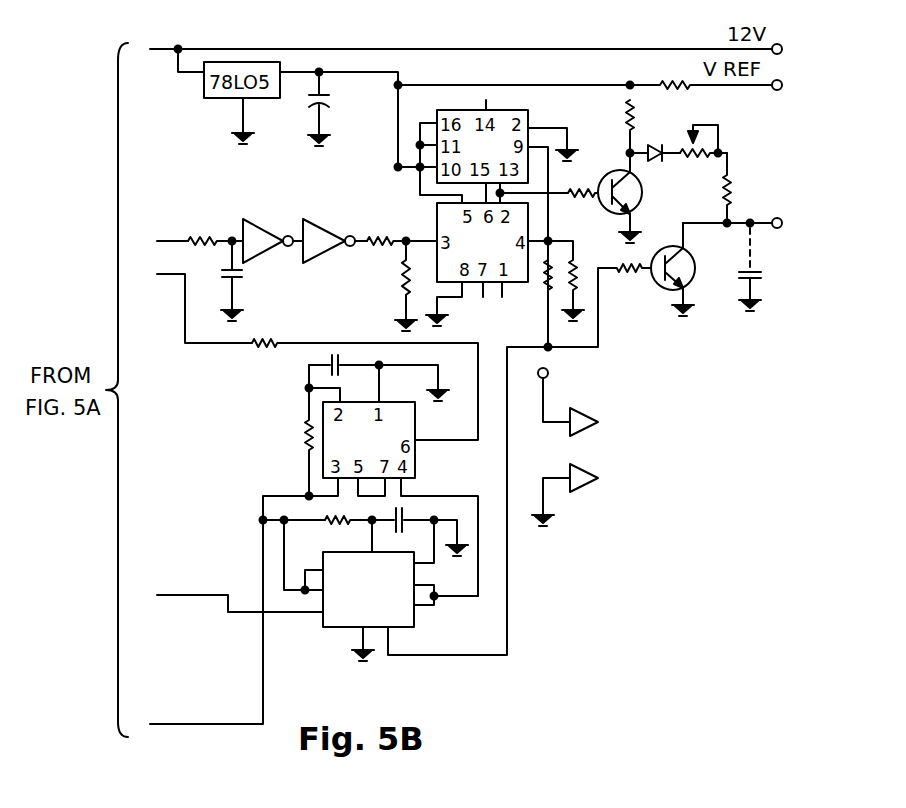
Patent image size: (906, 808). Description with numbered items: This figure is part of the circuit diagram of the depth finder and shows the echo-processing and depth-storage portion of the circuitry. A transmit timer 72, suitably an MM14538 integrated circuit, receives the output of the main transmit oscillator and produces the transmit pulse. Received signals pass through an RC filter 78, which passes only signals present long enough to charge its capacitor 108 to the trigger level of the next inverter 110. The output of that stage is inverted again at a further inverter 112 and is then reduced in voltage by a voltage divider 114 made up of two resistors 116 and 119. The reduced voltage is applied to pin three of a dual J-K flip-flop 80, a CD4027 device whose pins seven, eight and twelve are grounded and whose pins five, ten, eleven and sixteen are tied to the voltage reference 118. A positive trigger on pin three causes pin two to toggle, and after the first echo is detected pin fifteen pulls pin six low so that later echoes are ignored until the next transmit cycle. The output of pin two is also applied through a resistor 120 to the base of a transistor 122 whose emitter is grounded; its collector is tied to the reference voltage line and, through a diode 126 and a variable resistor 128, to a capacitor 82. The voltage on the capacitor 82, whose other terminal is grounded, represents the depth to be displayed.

The transmit timer 72 is at (321, 632).
The RC filter 78 is at (208, 236).
The dual J-K flip-flop 80 is at (495, 300).
The capacitor 82 is at (740, 282).
The capacitor 108 is at (245, 285).
The inverter 110 is at (270, 231).
The inverter 112 is at (335, 233).
The voltage divider 114 is at (401, 238).
The resistor 116 is at (372, 250).
The voltage reference 118 is at (779, 76).
The resistor 119 is at (400, 285).
The resistor 120 is at (584, 188).
The transistor 122 is at (612, 220).
The diode 126 is at (655, 143).
The variable resistor 128 is at (696, 158).